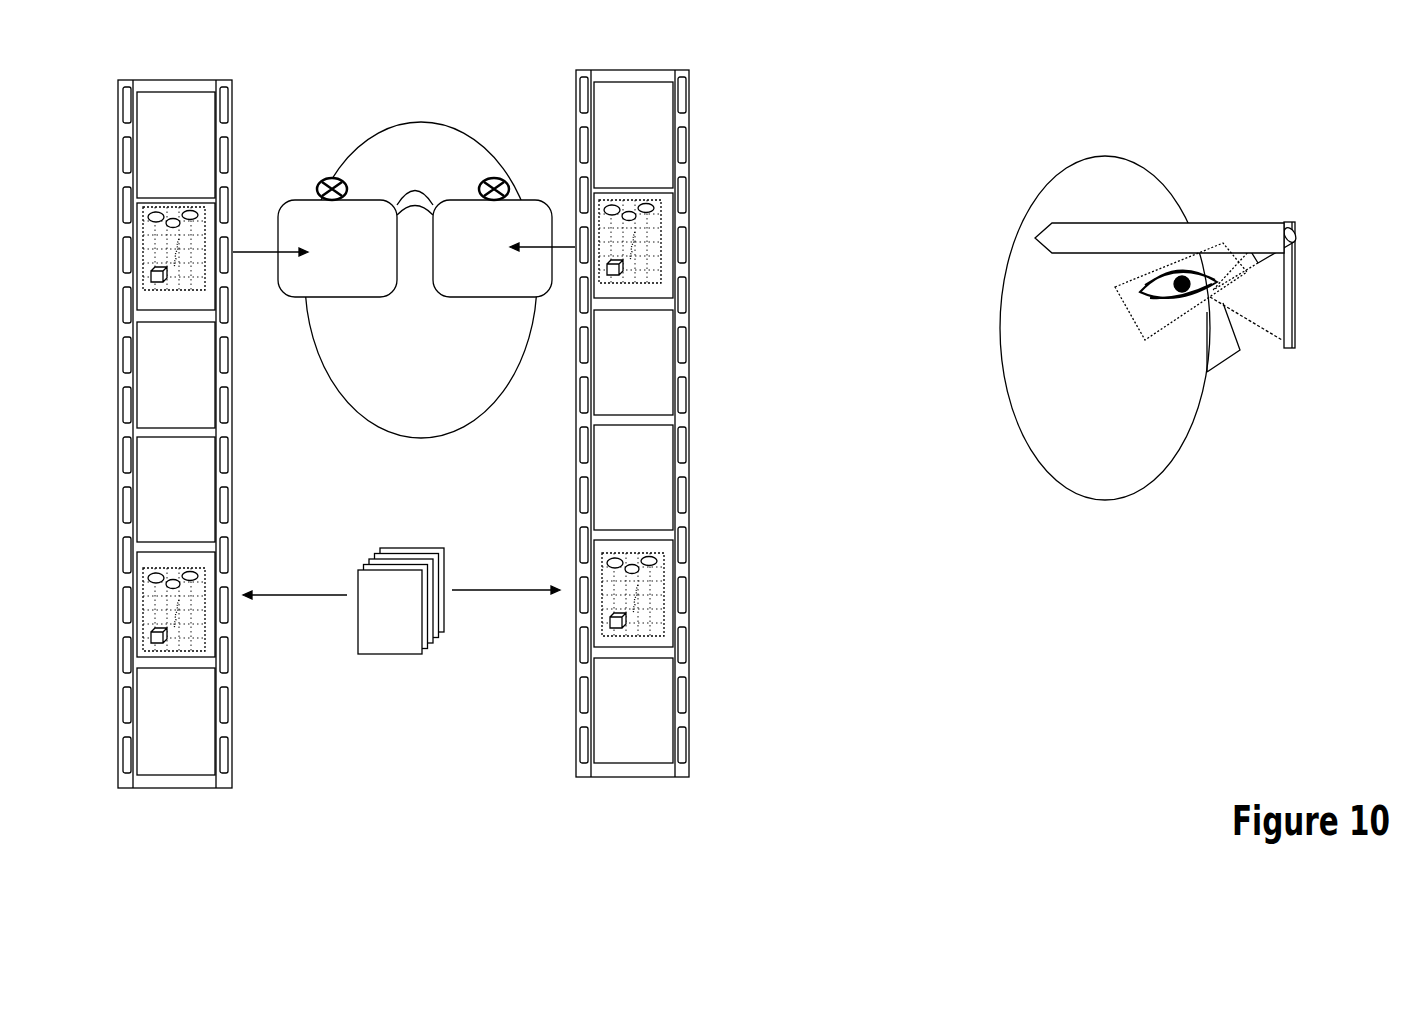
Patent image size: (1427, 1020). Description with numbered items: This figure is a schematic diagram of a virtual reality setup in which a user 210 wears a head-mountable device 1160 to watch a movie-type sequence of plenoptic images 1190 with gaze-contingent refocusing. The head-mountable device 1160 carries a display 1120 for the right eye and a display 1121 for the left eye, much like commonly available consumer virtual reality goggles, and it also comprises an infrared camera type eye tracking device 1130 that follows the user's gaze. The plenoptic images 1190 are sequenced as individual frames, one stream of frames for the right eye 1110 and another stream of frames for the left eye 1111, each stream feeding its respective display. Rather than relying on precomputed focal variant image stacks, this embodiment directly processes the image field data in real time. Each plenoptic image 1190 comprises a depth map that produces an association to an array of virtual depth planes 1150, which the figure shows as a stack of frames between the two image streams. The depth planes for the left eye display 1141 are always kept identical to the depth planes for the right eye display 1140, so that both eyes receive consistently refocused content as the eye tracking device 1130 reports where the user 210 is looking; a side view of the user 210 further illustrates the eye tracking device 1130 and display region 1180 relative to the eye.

The user 210 is at (482, 142).
The right eye frames 1110 is at (234, 128).
The left eye frames 1111 is at (692, 138).
The right eye display 1120 is at (370, 212).
The left eye display 1121 is at (520, 212).
The eye tracking device 1130 is at (330, 180).
The right eye display depth planes 1140 is at (290, 594).
The left eye display depth planes 1141 is at (500, 590).
The array of virtual depth planes 1150 is at (412, 546).
The head-mountable device 1160 is at (1180, 224).
The eye tracking region 1180 is at (1138, 338).
The plenoptic image 1190 is at (168, 208).